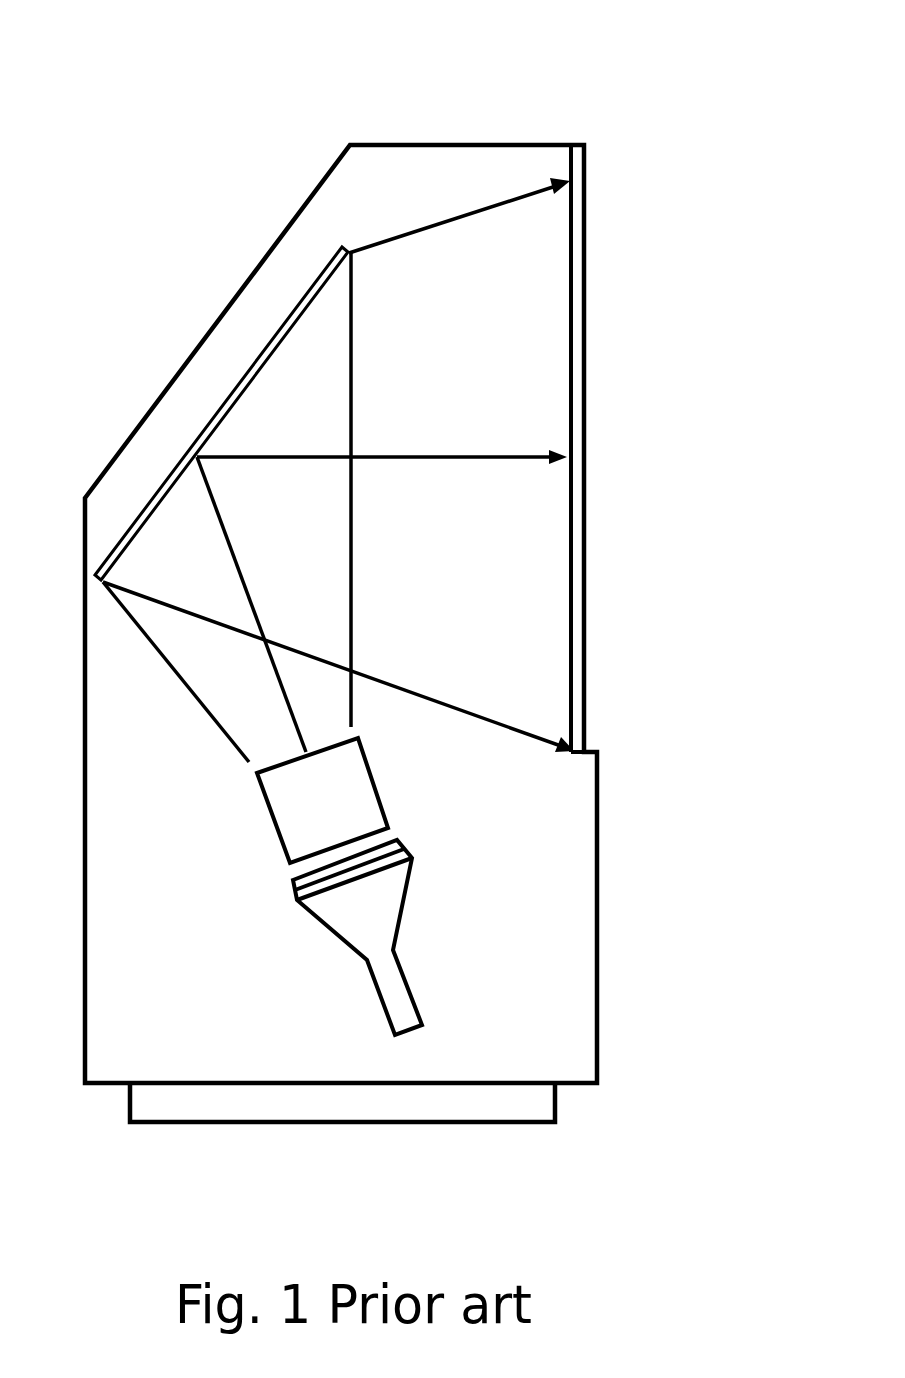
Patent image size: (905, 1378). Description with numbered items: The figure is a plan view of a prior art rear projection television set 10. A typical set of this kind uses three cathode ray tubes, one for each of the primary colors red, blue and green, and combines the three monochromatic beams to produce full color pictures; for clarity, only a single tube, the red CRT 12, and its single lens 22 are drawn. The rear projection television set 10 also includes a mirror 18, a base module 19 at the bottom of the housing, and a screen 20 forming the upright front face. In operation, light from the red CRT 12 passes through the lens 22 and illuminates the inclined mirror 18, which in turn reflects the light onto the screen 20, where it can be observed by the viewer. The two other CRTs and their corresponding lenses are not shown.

The rear projection television set 10 is at (657, 78).
The red CRT 12 is at (330, 927).
The mirror 18 is at (247, 368).
The base module 19 is at (383, 1102).
The screen 20 is at (572, 630).
The lens 22 is at (262, 817).